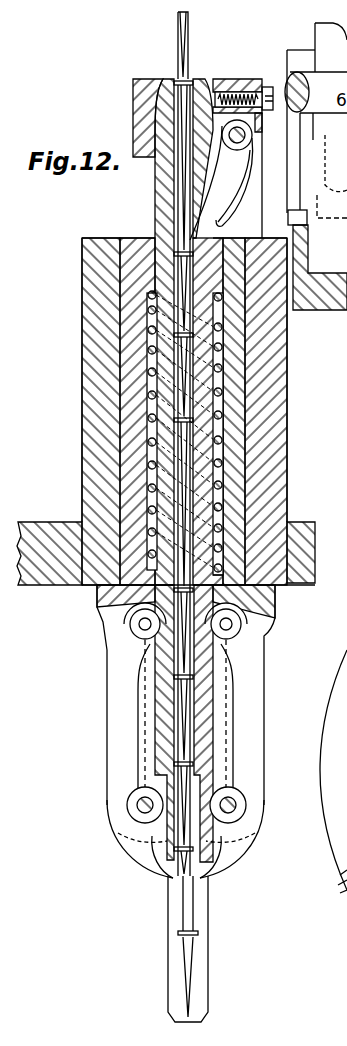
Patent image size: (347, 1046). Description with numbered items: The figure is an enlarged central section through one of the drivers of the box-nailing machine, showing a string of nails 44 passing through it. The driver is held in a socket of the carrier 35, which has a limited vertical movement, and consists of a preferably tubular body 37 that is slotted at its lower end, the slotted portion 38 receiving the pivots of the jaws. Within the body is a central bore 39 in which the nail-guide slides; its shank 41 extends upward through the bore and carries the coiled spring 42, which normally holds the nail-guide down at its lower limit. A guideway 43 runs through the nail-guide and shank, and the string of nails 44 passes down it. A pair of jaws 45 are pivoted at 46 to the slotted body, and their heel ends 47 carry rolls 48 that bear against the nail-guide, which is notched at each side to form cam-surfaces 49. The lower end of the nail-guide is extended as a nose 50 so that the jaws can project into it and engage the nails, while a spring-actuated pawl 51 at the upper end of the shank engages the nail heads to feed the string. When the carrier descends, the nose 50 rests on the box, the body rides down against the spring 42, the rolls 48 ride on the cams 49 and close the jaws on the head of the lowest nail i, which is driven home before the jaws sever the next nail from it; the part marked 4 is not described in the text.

The tube 4 is at (222, 580).
The carrier 35 is at (293, 527).
The body 37 is at (237, 428).
The slotted portion 38 is at (258, 663).
The central bore 39 is at (222, 399).
The shank 41 is at (222, 478).
The spring 42 is at (147, 376).
The guideway 43 is at (196, 782).
The string of nails 44 is at (183, 652).
The jaws 45 is at (133, 853).
The pivots 46 is at (138, 812).
The heel ends 47 is at (138, 628).
The rolls 48 is at (100, 614).
The cam-surfaces 49 is at (157, 679).
The extension 50 is at (203, 984).
The spring-actuated pawl 51 is at (223, 182).
The lowest nail i is at (196, 935).